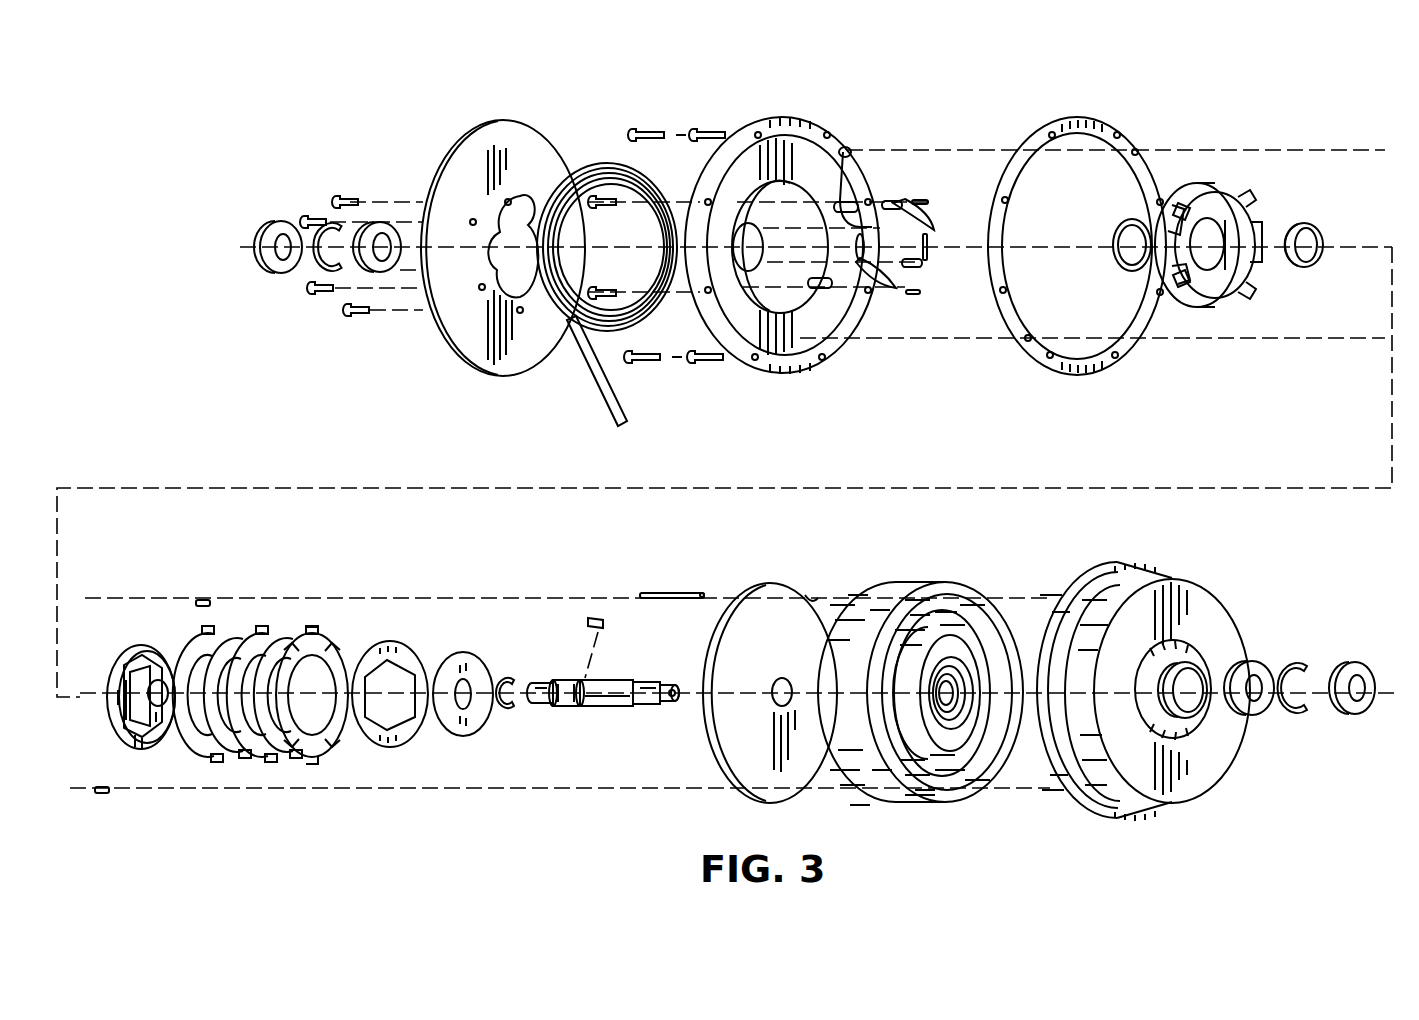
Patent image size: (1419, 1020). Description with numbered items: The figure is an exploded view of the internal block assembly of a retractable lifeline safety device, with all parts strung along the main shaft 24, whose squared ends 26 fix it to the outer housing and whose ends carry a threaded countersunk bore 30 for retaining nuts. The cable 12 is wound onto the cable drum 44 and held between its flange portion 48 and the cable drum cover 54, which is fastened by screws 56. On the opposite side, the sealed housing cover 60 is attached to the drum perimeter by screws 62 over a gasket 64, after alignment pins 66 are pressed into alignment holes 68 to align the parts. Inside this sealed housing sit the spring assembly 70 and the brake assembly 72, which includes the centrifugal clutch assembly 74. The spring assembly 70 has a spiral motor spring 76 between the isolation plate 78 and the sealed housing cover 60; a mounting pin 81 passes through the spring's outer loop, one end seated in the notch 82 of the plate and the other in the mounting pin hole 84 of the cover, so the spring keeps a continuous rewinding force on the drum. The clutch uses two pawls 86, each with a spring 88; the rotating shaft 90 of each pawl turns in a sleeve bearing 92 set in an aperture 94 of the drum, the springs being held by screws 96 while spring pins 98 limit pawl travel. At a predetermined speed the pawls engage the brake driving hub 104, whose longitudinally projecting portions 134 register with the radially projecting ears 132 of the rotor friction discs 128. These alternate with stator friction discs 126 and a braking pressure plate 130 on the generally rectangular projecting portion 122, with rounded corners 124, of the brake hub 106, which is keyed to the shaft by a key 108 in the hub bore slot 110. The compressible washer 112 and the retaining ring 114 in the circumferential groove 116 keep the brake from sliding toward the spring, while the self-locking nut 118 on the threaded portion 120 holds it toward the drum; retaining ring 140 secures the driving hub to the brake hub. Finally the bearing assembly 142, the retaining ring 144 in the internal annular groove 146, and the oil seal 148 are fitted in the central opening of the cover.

The cable 12 is at (603, 400).
The main shaft 24 is at (600, 680).
The squared ends 26 is at (535, 680).
The threaded countersunk bore 30 is at (672, 685).
The cable drum 44 is at (745, 112).
The flange portion 48 is at (640, 298).
The cable drum cover 54 is at (512, 125).
The screws 56 is at (318, 296).
The sealed housing cover 60 is at (1212, 760).
The screws 62 is at (705, 126).
The gasket 64 is at (1108, 118).
The alignment pins 66 is at (200, 598).
The alignment holes 68 is at (845, 150).
The spring assembly 70 is at (958, 812).
The brake assembly 72 is at (345, 610).
The centrifugal clutch assembly 74 is at (940, 180).
The spiral motor spring 76 is at (836, 640).
The isolation plate 78 is at (762, 600).
The mounting pin 81 is at (670, 592).
The notch 82 is at (812, 596).
The mounting pin hole 84 is at (1197, 596).
The pawls 86 is at (936, 226).
The springs 88 is at (866, 247).
The rotating shaft 90 is at (893, 199).
The sleeve bearing 92 is at (846, 146).
The aperture 94 is at (740, 215).
The screws 96 is at (843, 200).
The spring pins 98 is at (922, 198).
The brake driving hub 104 is at (1205, 180).
The brake hub 106 is at (110, 688).
The key 108 is at (605, 620).
The hub bore slot 110 is at (135, 660).
The compressible washer 112 is at (470, 655).
The retaining ring 114 is at (510, 710).
The circumferential groove 116 is at (590, 708).
The self-locking nut 118 is at (1312, 225).
The threaded portion 120 is at (565, 708).
The projecting portion 122 is at (140, 740).
The rounded corners 124 is at (128, 672).
The stator friction discs 126 is at (212, 745).
The rotor friction discs 128 is at (260, 630).
The braking pressure plate 130 is at (415, 726).
The radially projecting ears 132 is at (270, 628).
The longitudinally projecting portions 134 is at (1236, 192).
The retaining ring 140 is at (1125, 220).
The bearing assembly 142 is at (378, 222).
The retaining ring 144 is at (322, 228).
The internal annular groove 146 is at (1190, 680).
The oil seal 148 is at (262, 240).